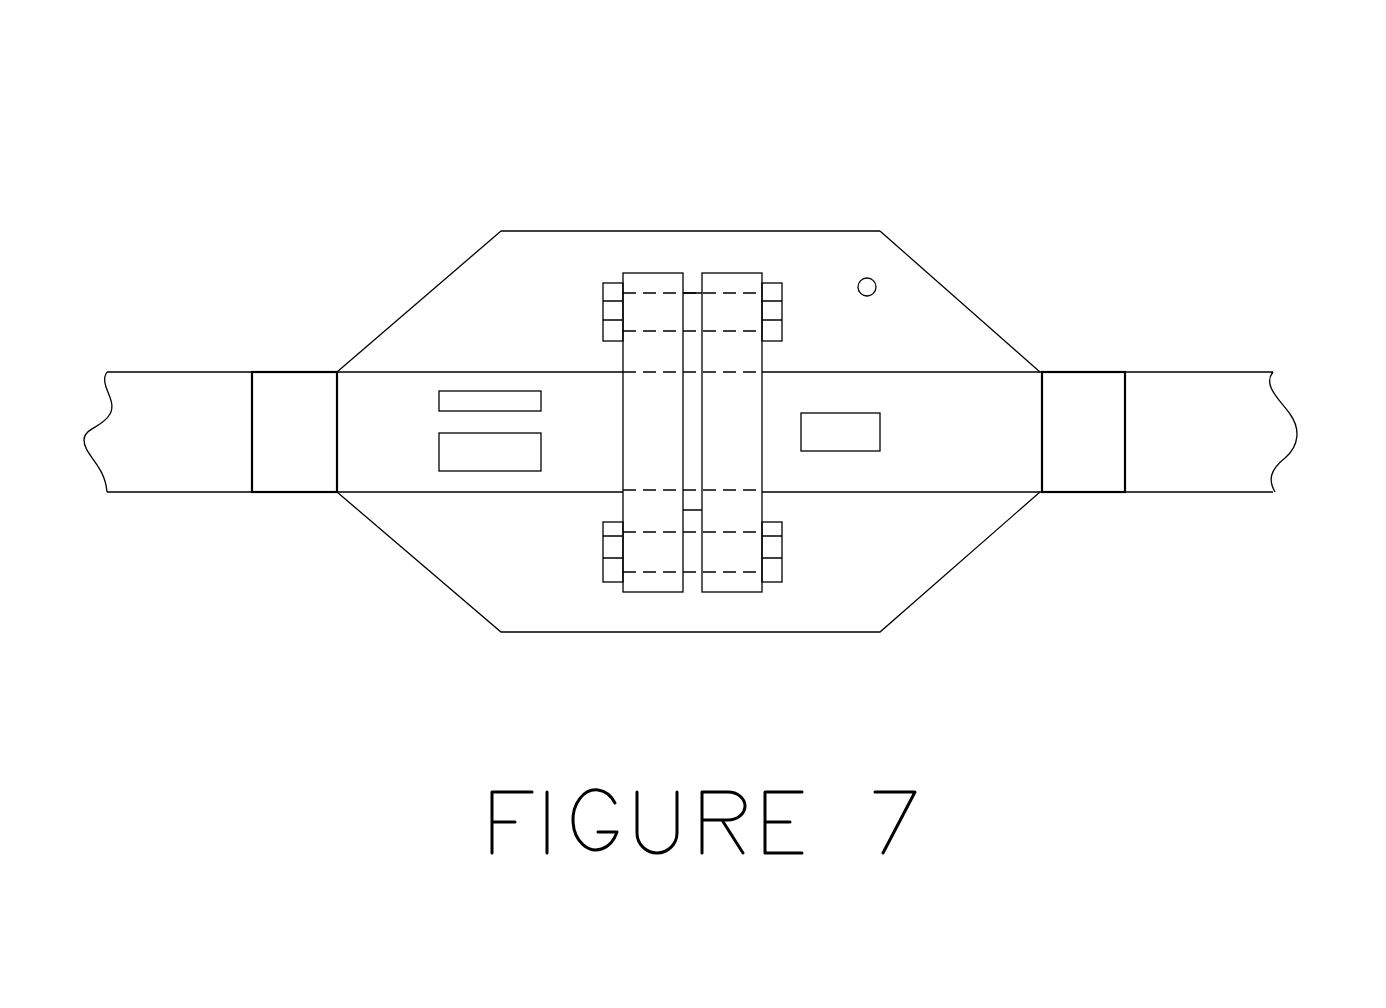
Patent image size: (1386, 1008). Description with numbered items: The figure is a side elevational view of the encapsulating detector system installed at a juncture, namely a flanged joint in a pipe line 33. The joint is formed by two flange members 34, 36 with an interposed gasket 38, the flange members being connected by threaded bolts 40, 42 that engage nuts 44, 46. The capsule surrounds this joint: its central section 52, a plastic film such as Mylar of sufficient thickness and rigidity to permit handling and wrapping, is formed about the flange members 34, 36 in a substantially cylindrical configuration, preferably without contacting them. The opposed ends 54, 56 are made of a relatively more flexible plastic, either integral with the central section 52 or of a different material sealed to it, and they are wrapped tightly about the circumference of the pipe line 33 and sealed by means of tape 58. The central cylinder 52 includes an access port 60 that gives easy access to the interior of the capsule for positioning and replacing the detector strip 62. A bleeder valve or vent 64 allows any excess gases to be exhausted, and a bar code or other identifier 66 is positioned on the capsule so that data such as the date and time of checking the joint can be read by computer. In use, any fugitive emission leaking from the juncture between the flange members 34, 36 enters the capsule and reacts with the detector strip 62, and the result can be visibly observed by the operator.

The pipe line 33 is at (150, 383).
The flange member 34 is at (656, 277).
The flange member 36 is at (729, 275).
The gasket 38 is at (690, 370).
The threaded bolt 40 is at (773, 288).
The threaded bolt 42 is at (773, 572).
The nut 44 is at (617, 288).
The nut 46 is at (615, 527).
The central section 52 is at (529, 248).
The end 54 is at (405, 319).
The end 56 is at (980, 355).
The tape 58 is at (289, 462).
The access port 60 is at (468, 455).
The detector strip 62 is at (457, 402).
The bleeder valve or vent 64 is at (875, 280).
The bar code or other identifier 66 is at (842, 437).